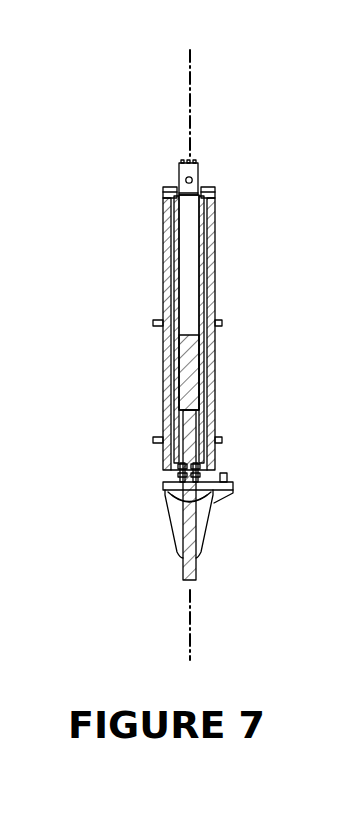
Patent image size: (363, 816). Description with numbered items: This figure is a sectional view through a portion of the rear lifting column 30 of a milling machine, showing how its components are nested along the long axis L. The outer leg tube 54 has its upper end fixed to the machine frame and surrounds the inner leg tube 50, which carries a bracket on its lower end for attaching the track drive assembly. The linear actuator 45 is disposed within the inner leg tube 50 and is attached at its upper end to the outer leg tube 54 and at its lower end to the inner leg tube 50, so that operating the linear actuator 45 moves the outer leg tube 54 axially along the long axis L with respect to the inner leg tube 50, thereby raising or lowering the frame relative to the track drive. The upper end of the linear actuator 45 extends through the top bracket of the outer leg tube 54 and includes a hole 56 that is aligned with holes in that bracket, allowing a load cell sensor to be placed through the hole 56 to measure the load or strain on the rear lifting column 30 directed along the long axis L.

The long axis L is at (197, 80).
The rear lifting column 30 is at (243, 206).
The linear actuator 45 is at (186, 278).
The inner leg tube 50 is at (212, 310).
The outer leg tube 54 is at (221, 355).
The hole 56 is at (199, 171).